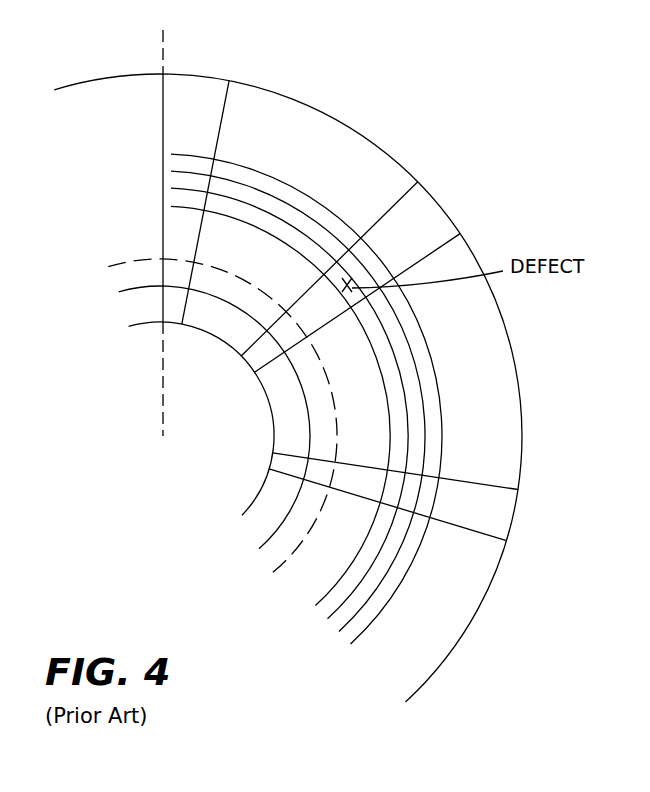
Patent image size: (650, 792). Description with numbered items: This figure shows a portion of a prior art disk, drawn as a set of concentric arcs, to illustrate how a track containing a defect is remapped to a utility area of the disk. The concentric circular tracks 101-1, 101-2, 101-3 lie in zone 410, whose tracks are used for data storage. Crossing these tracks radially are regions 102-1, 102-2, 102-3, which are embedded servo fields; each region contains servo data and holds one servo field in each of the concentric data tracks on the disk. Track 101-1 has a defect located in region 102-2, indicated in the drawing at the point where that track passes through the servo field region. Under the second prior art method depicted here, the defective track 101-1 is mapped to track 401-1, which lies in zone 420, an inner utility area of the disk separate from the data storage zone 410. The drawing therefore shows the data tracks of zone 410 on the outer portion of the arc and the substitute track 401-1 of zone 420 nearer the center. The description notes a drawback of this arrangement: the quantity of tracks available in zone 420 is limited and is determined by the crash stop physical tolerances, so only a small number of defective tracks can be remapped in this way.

The track 101-1 is at (171, 188).
The track 101-2 is at (180, 172).
The track 101-3 is at (179, 154).
The region 102-1 is at (197, 85).
The region 102-2 is at (430, 210).
The region 102-3 is at (505, 512).
The track 401-1 is at (134, 288).
The zone 410 is at (401, 714).
The zone 420 is at (276, 580).